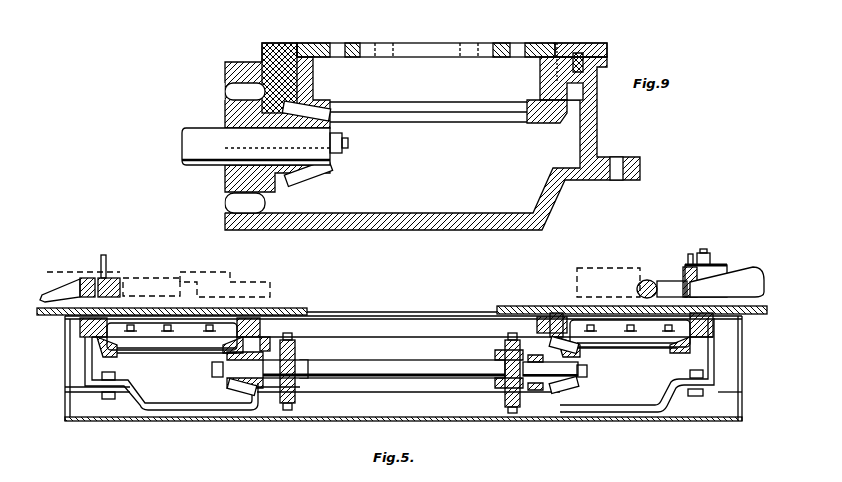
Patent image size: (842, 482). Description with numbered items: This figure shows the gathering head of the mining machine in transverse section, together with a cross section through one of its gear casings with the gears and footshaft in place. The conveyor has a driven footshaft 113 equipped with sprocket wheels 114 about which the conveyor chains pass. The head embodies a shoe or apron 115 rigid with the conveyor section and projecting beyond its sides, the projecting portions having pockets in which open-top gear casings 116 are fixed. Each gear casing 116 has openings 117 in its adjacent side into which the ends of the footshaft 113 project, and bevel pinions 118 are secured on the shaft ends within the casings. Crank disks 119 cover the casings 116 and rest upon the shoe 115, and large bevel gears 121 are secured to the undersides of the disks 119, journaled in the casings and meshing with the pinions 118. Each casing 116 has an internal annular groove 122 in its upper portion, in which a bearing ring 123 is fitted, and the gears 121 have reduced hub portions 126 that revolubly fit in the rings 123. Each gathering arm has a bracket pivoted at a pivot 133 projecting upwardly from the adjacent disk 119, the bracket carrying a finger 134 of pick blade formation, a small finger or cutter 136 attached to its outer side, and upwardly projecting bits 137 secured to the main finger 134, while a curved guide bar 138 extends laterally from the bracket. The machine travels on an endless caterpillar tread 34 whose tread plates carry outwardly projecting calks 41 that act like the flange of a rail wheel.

In FIG. 9, the caterpillar tread 34 is at (393, 28).
In FIG. 9, the calks 41 is at (212, 2).
In FIG. 9, the footshaft 113 is at (198, 133).
In FIG. 5, the footshaft 113 is at (405, 360).
In FIG. 5, the sprocket wheels 114 is at (291, 410).
In FIG. 5, the shoe or apron 115 is at (353, 312).
In FIG. 9, the gear casing 116 is at (432, 143).
In FIG. 5, the gear casing 116 is at (187, 421).
In FIG. 9, the openings 117 is at (232, 187).
In FIG. 5, the openings 117 is at (537, 392).
In FIG. 9, the bevel pinions 118 is at (307, 183).
In FIG. 5, the bevel pinions 118 is at (238, 421).
In FIG. 5, the crank disks 119 is at (293, 306).
In FIG. 9, the large bevel gears 121 is at (540, 121).
In FIG. 5, the large bevel gears 121 is at (147, 353).
In FIG. 9, the internal annular groove 122 is at (607, 54).
In FIG. 9, the bearing ring 123 is at (571, 42).
In FIG. 5, the bearing ring 123 is at (741, 352).
In FIG. 9, the reduced hub portions 126 is at (548, 43).
In FIG. 5, the pivot 133 is at (703, 252).
In FIG. 5, the finger 134 is at (725, 266).
In FIG. 5, the small finger or cutter 136 is at (760, 282).
In FIG. 5, the bits 137 is at (688, 254).
In FIG. 5, the curved guide bar 138 is at (348, 269).